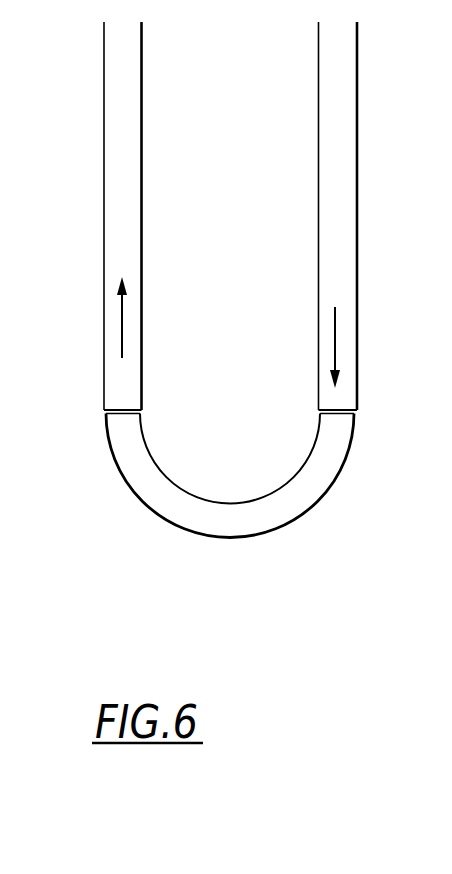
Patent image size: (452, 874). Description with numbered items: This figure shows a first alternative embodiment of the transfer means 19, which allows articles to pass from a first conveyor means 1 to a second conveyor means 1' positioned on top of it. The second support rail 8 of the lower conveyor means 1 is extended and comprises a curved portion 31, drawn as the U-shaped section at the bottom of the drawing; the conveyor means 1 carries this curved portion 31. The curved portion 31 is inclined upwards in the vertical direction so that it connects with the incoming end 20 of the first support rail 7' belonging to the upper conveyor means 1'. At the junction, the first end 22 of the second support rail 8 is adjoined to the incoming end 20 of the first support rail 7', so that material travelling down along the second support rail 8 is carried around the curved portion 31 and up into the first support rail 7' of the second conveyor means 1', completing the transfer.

The conveyor means 1 is at (371, 216).
The second conveyor means 1' is at (89, 216).
The first support rail 7' is at (85, 317).
The second support rail 8 is at (345, 315).
The transfer means 19 is at (245, 522).
The incoming end of the first support rail 20 is at (102, 371).
The first end of the second support rail 22 is at (103, 415).
The curved portion 31 is at (180, 513).